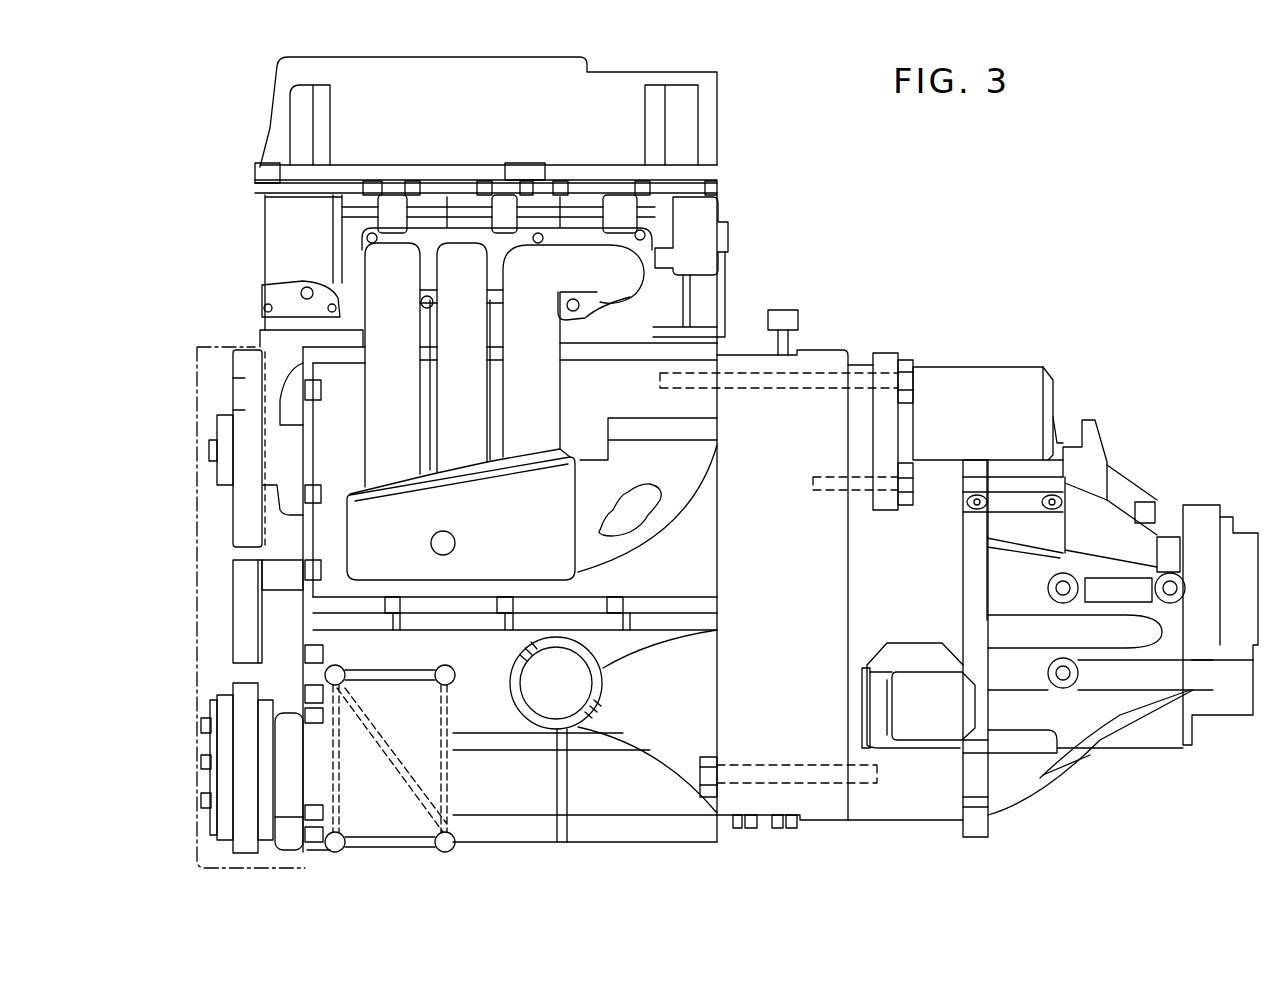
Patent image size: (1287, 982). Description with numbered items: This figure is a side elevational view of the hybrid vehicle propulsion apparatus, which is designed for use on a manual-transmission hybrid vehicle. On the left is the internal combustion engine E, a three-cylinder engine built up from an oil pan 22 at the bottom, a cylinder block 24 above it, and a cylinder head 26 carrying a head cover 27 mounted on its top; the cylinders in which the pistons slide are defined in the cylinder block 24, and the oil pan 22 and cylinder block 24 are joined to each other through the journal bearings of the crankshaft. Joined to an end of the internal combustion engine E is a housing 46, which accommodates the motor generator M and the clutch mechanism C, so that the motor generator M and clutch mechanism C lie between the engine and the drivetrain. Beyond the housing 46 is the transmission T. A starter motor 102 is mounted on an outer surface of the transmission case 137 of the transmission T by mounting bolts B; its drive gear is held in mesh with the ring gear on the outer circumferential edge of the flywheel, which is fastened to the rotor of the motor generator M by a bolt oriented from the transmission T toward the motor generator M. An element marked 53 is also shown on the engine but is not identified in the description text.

The head cover 27 is at (527, 108).
The cylinder head 26 is at (288, 247).
The cylinder block 24 is at (347, 423).
The oil pan 22 is at (513, 833).
The oil filter 53 is at (567, 702).
The housing 46 is at (773, 800).
The transmission case 137 is at (893, 805).
The starter motor 102 is at (960, 375).
The motor generator M is at (737, 348).
The clutch mechanism C is at (822, 341).
The mounting bolts B is at (905, 355).
The transmission T is at (1128, 475).
The internal combustion engine E is at (197, 730).